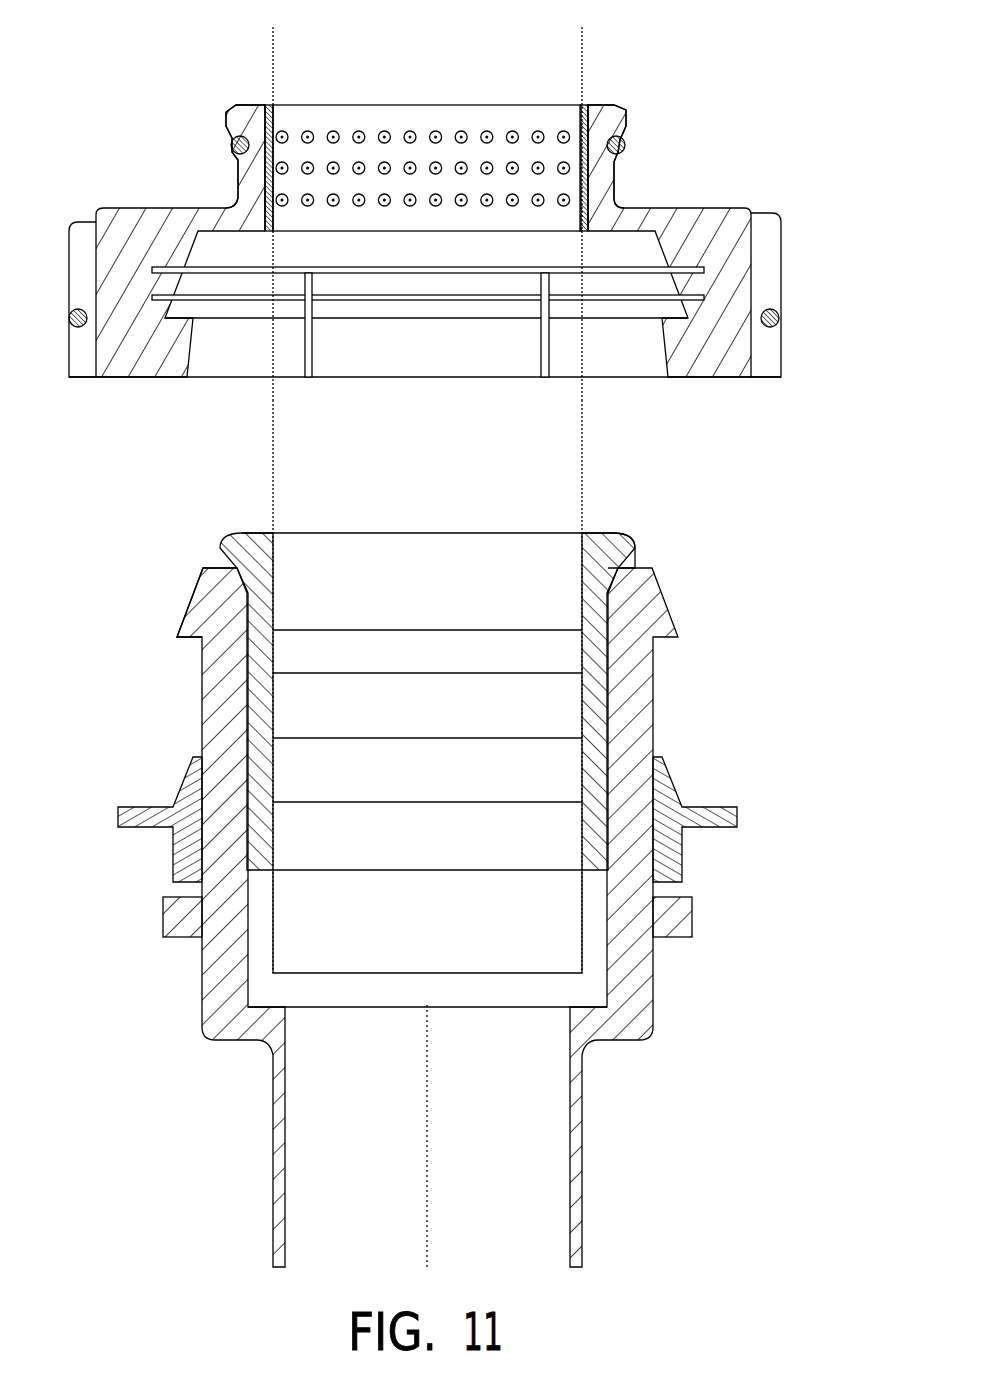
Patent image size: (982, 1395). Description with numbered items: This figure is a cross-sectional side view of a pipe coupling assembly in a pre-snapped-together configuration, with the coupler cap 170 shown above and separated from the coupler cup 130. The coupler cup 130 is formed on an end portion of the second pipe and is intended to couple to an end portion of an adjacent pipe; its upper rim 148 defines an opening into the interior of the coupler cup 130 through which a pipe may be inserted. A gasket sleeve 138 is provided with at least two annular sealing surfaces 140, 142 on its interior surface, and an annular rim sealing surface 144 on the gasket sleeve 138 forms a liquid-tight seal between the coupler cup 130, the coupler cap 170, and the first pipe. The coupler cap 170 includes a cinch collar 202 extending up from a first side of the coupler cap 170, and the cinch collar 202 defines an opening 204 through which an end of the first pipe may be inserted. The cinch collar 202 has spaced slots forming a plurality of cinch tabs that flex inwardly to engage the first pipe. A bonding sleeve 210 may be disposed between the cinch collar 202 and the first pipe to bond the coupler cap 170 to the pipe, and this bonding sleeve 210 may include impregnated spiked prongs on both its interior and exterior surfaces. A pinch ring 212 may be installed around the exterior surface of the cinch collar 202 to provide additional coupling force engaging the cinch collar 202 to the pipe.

The coupler cup 130 is at (652, 678).
The gasket sleeve 138 is at (638, 548).
The annular sealing surface 140 is at (590, 712).
The annular sealing surface 142 is at (583, 822).
The annular rim sealing surface 144 is at (612, 537).
The upper rim 148 is at (223, 563).
The coupler cap 170 is at (719, 207).
The cinch collar 202 is at (236, 108).
The opening 204 is at (270, 123).
The bonding sleeve 210 is at (446, 148).
The pinch ring 212 is at (230, 145).